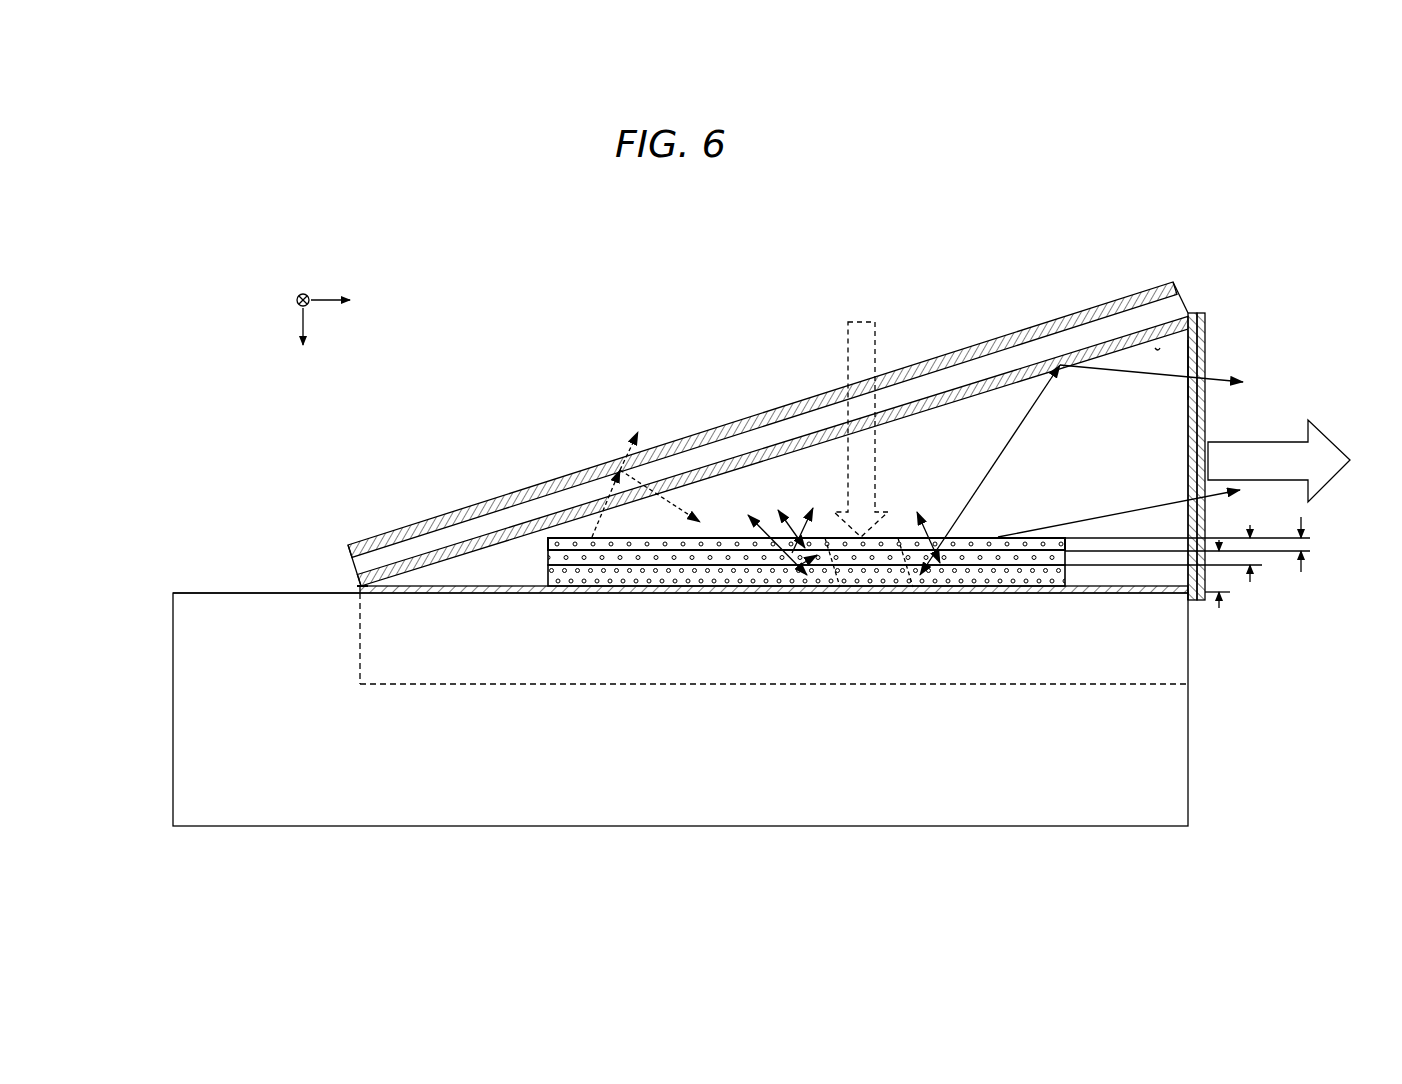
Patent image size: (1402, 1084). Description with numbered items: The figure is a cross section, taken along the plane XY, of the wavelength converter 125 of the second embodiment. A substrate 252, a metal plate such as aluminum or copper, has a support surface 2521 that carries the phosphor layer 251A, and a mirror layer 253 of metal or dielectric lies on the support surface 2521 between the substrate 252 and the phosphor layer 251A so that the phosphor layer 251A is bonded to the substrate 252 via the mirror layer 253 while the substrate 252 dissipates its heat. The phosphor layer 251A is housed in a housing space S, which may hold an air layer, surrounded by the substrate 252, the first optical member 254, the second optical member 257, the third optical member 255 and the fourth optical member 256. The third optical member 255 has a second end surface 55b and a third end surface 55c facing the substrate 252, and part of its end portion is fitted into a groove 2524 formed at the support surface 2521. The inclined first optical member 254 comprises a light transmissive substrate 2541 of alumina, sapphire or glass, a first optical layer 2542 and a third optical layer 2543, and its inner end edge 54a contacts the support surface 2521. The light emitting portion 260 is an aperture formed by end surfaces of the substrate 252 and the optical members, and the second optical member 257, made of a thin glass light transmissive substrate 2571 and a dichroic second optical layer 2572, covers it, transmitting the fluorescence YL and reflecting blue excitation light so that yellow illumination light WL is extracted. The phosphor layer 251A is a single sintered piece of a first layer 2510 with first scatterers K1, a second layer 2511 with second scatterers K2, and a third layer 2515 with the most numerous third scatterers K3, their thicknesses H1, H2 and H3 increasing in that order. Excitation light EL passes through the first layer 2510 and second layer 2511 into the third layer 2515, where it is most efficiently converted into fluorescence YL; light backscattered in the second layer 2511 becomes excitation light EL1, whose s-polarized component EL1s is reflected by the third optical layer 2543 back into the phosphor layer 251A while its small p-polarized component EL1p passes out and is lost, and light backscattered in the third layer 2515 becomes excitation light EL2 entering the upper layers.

The wavelength converter 125 is at (773, 501).
The substrate 252 is at (680, 700).
The support surface 2521 is at (228, 593).
The groove 2524 is at (774, 734).
The third end surface 55c is at (798, 684).
The mirror layer 253 is at (400, 588).
The inner end edge 54a is at (357, 587).
The phosphor layer 251A is at (632, 619).
The first layer 2510 is at (674, 598).
The second layer 2511 is at (674, 606).
The third layer 2515 is at (674, 630).
The first scatterers K1 is at (605, 545).
The second scatterers K2 is at (667, 560).
The third scatterers K3 is at (700, 586).
The first optical member 254 is at (768, 389).
The light transmissive substrate 2541 is at (872, 236).
The first optical layer 2542 is at (910, 407).
The third optical layer 2543 is at (972, 343).
The third optical member 255 is at (1157, 348).
The fourth optical member 256 is at (1212, 277).
The second optical member 257 is at (1275, 427).
The light transmissive substrate 2571 is at (1205, 315).
The second optical layer 2572 is at (1192, 313).
The light emitting portion 260 is at (1201, 348).
The second end surface 55b is at (1190, 364).
The housing space S is at (1107, 400).
The excitation light EL is at (842, 368).
The excitation light EL1 is at (590, 533).
The p-polarized component EL1p is at (628, 452).
The s-polarized component EL1s is at (677, 500).
The excitation light EL2 is at (923, 570).
The fluorescence YL is at (792, 515).
The illumination light WL is at (1323, 447).
The thickness H1 is at (1322, 544).
The thickness H2 is at (1270, 554).
The thickness H3 is at (1239, 581).